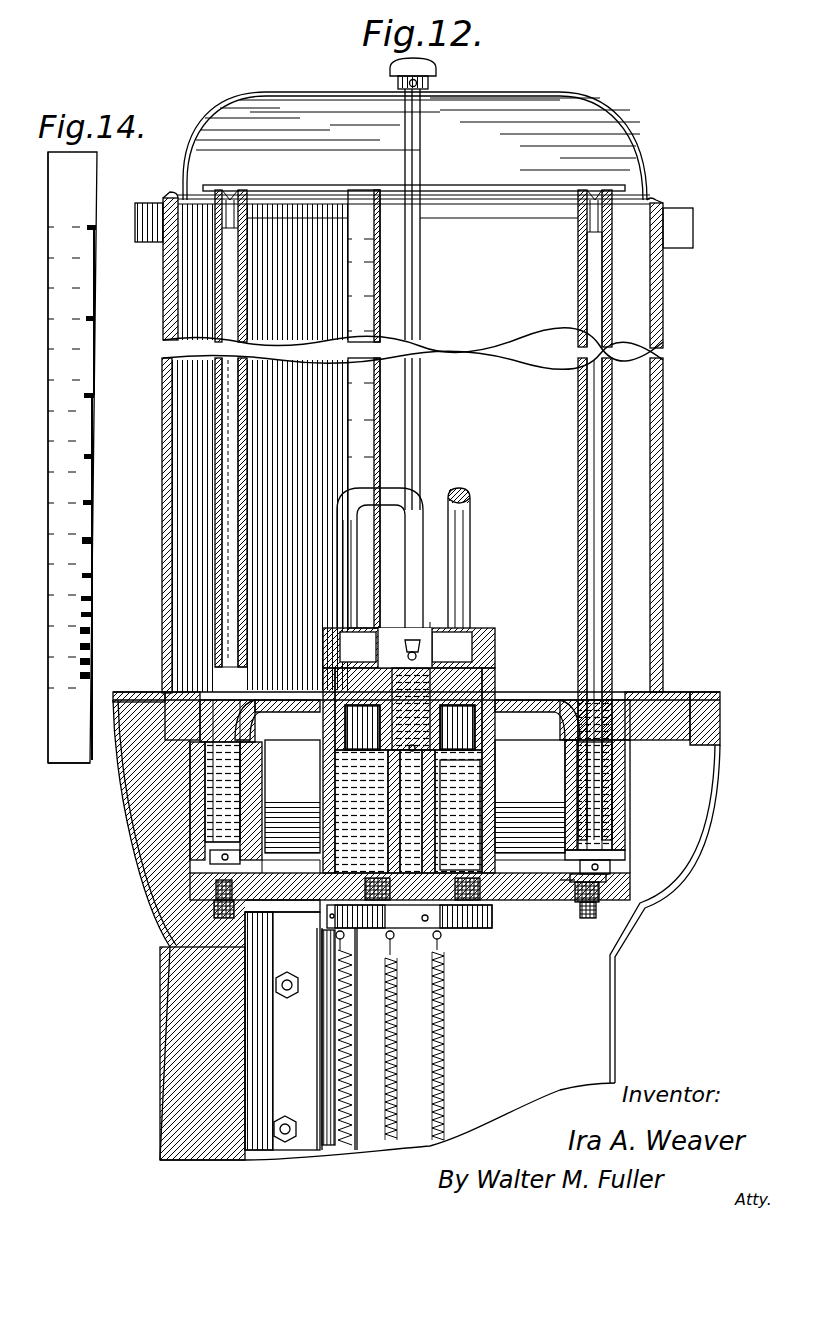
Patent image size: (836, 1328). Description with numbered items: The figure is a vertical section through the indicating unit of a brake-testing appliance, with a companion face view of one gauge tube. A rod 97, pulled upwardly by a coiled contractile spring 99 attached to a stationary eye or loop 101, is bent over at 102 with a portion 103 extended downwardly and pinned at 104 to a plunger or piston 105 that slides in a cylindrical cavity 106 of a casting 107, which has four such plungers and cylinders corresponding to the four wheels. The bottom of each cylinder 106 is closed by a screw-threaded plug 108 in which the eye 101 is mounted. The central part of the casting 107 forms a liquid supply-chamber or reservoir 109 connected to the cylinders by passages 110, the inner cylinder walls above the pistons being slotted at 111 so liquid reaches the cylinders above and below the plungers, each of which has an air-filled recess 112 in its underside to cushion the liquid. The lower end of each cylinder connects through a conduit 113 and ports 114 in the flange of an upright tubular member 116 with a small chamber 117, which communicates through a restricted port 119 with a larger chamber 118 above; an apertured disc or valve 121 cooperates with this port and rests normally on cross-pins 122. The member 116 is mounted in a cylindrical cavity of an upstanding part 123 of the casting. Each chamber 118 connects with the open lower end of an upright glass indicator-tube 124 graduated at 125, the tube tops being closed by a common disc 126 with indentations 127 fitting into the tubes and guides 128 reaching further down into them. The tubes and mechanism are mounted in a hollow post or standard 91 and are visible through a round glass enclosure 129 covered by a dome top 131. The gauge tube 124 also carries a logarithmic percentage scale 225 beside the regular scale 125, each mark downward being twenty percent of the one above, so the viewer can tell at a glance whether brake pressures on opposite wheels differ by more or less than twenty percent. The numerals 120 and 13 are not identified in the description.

In FIG. 12, the dome top 131 is at (620, 123).
In FIG. 12, the disc 126 is at (500, 187).
In FIG. 12, the indentations 127 is at (595, 196).
In FIG. 12, the guides 128 is at (587, 222).
In FIG. 12, the glass enclosure 129 is at (663, 545).
In FIG. 12, the glass indicator-tube 124 is at (213, 588).
In FIG. 14, the glass indicator-tube 124 is at (98, 343).
In FIG. 14, the percentage scale 225 is at (92, 398).
In FIG. 12, the graduations 125 is at (352, 420).
In FIG. 14, the graduations 125 is at (66, 470).
In FIG. 12, the apertured disc or valve 121 is at (578, 538).
In FIG. 12, the bent-over portion of rod 102 is at (400, 498).
In FIG. 12, the downwardly extended portion 103 is at (355, 610).
In FIG. 12, the slots 111 is at (430, 622).
In FIG. 12, the pin fastening 104 is at (495, 640).
In FIG. 12, the stationary eye or loop 101 is at (405, 648).
In FIG. 12, the plunger or piston 105 is at (510, 700).
In FIG. 12, the cavity or recess 112 is at (355, 740).
In FIG. 12, the conduits or passages 110 is at (410, 752).
In FIG. 12, the cylindrical cavity 106 is at (492, 778).
In FIG. 12, the casting 107 is at (482, 825).
In FIG. 12, the liquid supply-chamber or reservoir 109 is at (405, 800).
In FIG. 12, the conduit 113 is at (515, 870).
In FIG. 12, the larger chamber 118 is at (600, 778).
In FIG. 12, the upstanding part 123 is at (612, 795).
In FIG. 12, the tubular member 116 is at (615, 812).
In FIG. 12, the restricted port 119 is at (608, 840).
In FIG. 12, the bracket 120 is at (610, 862).
In FIG. 12, the cross-pins 122 is at (600, 905).
In FIG. 12, the small chamber 117 is at (575, 900).
In FIG. 12, the ports 114 is at (560, 885).
In FIG. 12, the latch 13 is at (212, 857).
In FIG. 12, the screw-threaded plug 108 is at (492, 924).
In FIG. 12, the hollow post or standard 91 is at (632, 1035).
In FIG. 12, the coiled contractile spring 99 is at (445, 1074).
In FIG. 12, the rod 97 is at (350, 1150).